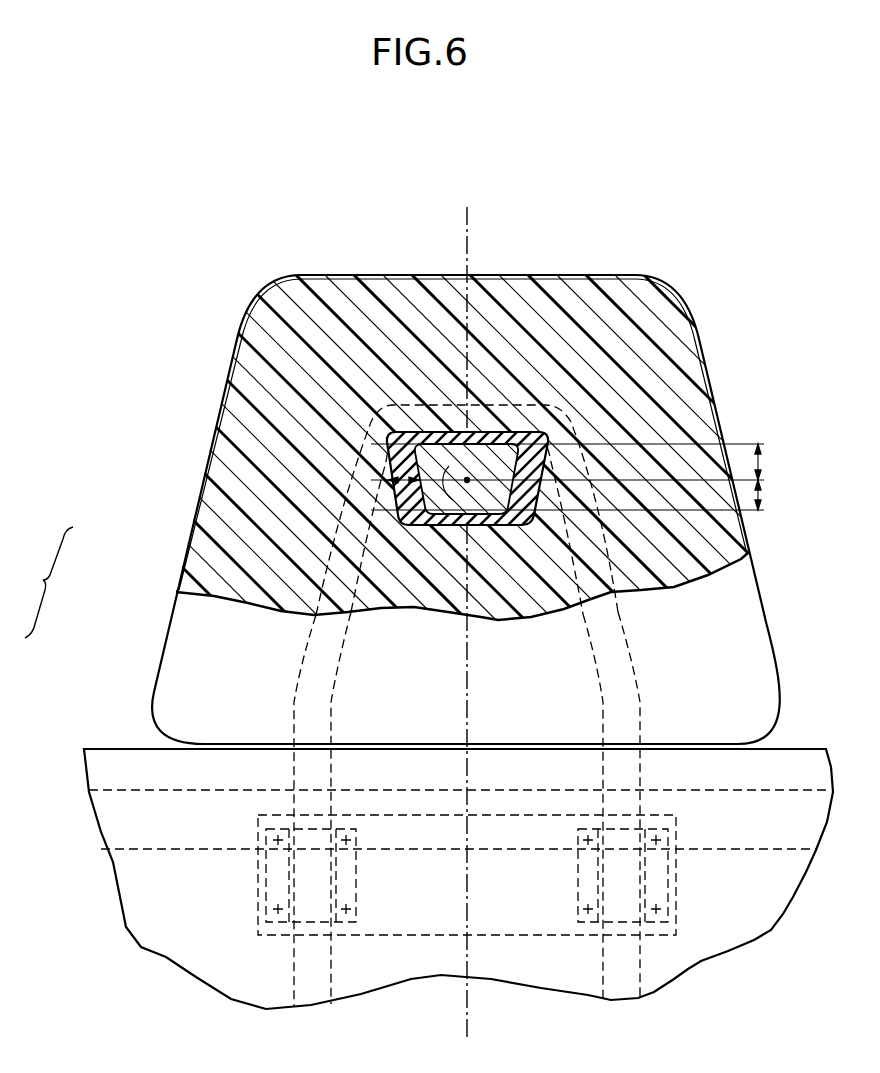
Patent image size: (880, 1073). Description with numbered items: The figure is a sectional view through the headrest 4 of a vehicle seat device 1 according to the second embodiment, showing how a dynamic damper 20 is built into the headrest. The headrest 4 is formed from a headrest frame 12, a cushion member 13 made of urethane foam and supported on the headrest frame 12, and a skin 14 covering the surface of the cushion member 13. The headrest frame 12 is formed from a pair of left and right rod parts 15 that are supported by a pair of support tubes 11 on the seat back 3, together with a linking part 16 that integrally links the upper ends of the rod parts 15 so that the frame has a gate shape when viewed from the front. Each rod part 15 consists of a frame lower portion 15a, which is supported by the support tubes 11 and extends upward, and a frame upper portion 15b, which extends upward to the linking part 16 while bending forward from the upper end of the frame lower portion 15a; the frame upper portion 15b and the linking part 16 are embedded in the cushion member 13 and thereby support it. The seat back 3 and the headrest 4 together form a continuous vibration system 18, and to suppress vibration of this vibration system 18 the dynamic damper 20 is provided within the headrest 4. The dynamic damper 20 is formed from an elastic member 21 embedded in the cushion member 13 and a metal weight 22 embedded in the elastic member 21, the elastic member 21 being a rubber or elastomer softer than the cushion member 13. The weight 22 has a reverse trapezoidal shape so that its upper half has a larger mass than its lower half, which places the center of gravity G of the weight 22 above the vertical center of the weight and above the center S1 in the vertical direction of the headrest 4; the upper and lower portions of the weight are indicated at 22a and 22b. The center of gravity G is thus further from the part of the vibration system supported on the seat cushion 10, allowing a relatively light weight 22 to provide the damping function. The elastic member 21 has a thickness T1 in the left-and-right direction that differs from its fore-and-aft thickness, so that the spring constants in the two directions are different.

The assembly 1 is at (137, 433).
The seat back 3 is at (110, 745).
The headrest 4 is at (182, 523).
The base plate 10 is at (405, 787).
The support tubes 11 is at (337, 878).
The headrest frame 12 is at (637, 667).
The cushion member 13 is at (277, 318).
The skin 14 is at (335, 273).
The rod parts 15 is at (442, 809).
The frame lower portion 15a is at (293, 768).
The frame upper portion 15b is at (305, 623).
The linking part 16 is at (427, 403).
The vibration system 18 is at (44, 582).
The dynamic damper 20 is at (447, 402).
The elastic member 21 is at (548, 430).
The weight 22 is at (493, 430).
The first thickness 22a is at (762, 460).
The second thickness 22b is at (762, 492).
The center of gravity G is at (464, 466).
The thickness in the left-and-right direction T1 is at (386, 470).
The center in the vertical direction of the headrest S1 is at (428, 522).